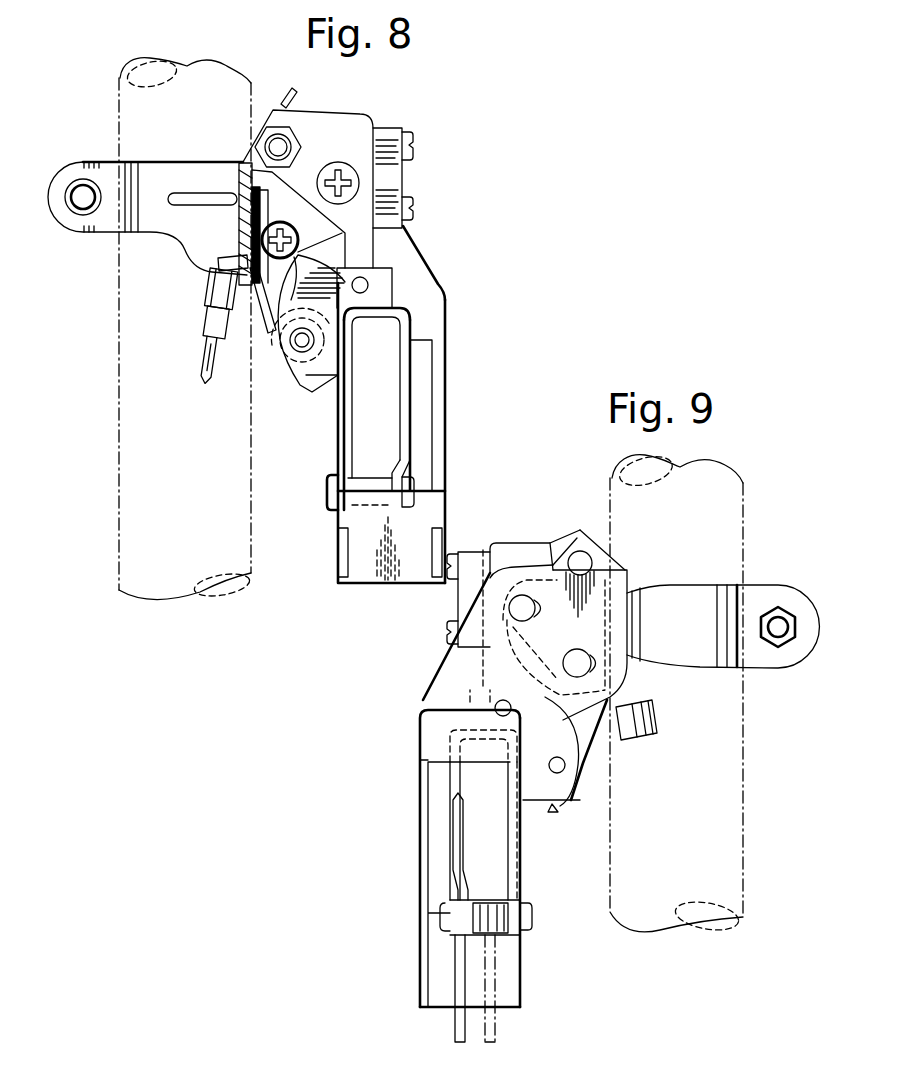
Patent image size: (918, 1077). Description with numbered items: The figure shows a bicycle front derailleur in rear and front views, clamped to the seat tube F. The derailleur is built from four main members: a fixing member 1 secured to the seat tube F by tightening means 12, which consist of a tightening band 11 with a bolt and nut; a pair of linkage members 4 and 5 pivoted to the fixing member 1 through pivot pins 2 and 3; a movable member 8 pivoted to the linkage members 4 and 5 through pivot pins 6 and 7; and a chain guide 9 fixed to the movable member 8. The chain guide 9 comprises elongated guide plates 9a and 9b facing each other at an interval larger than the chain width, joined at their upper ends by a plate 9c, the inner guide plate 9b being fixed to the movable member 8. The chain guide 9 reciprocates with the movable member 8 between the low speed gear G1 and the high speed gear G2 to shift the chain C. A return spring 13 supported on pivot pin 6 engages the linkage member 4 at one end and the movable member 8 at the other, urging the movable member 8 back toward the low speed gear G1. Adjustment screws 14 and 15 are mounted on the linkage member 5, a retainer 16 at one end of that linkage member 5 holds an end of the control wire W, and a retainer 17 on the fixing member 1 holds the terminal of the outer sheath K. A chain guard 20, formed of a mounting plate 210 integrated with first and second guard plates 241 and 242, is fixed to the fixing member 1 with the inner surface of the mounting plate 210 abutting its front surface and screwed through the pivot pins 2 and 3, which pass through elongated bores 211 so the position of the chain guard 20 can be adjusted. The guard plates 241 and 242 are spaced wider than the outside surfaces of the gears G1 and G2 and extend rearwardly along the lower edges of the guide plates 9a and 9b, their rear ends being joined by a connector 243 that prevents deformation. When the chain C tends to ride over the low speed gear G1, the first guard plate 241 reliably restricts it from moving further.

In FIG. 8, the fixing member 1 is at (405, 228).
In FIG. 9, the fixing member 1 is at (547, 585).
In FIG. 8, the pivot pin 2 is at (284, 217).
In FIG. 9, the pivot pin 2 is at (582, 666).
In FIG. 8, the pivot pin 3 is at (344, 170).
In FIG. 9, the pivot pin 3 is at (517, 607).
In FIG. 8, the linkage member 4 is at (281, 305).
In FIG. 9, the linkage member 4 is at (583, 728).
In FIG. 8, the linkage member 5 is at (372, 182).
In FIG. 9, the linkage member 5 is at (490, 677).
In FIG. 8, the pivot pin 6 is at (320, 376).
In FIG. 9, the pivot pin 6 is at (573, 782).
In FIG. 8, the pivot pin 7 is at (368, 284).
In FIG. 9, the pivot pin 7 is at (490, 702).
In FIG. 8, the movable member 8 is at (387, 295).
In FIG. 9, the movable member 8 is at (565, 768).
In FIG. 8, the chain guide 9 is at (413, 355).
In FIG. 9, the chain guide 9 is at (455, 786).
In FIG. 8, the guide plate 9a is at (413, 413).
In FIG. 9, the guide plate 9a is at (450, 872).
In FIG. 8, the guide plate 9b is at (345, 452).
In FIG. 9, the guide plate 9b is at (528, 888).
In FIG. 8, the plate 9c is at (382, 312).
In FIG. 8, the tightening band 11 is at (99, 232).
In FIG. 9, the tightening band 11 is at (723, 650).
In FIG. 8, the tightening means 12 is at (82, 200).
In FIG. 9, the tightening means 12 is at (782, 630).
In FIG. 8, the return spring 13 is at (333, 358).
In FIG. 8, the adjustment screw 14 is at (413, 139).
In FIG. 9, the adjustment screw 14 is at (458, 556).
In FIG. 8, the adjustment screw 15 is at (413, 208).
In FIG. 9, the adjustment screw 15 is at (447, 633).
In FIG. 8, the retainer 16 is at (276, 132).
In FIG. 9, the retainer 16 is at (580, 550).
In FIG. 8, the retainer 17 is at (213, 293).
In FIG. 9, the retainer 17 is at (657, 718).
In FIG. 8, the chain guard 20 is at (447, 299).
In FIG. 9, the chain guard 20 is at (419, 766).
In FIG. 9, the mounting plate 210 is at (458, 684).
In FIG. 9, the bore 211 is at (597, 668).
In FIG. 9, the first guard plate 241 is at (522, 857).
In FIG. 8, the second guard plate 242 is at (446, 448).
In FIG. 9, the second guard plate 242 is at (419, 822).
In FIG. 8, the connector 243 is at (370, 565).
In FIG. 9, the connector 243 is at (438, 982).
In FIG. 9, the chain C is at (507, 937).
In FIG. 8, the seat tube F is at (122, 440).
In FIG. 9, the seat tube F is at (745, 536).
In FIG. 9, the low speed gear G1 is at (493, 1017).
In FIG. 9, the high speed gear G2 is at (455, 1025).
In FIG. 8, the outer sheath K is at (207, 328).
In FIG. 8, the control wire W is at (216, 266).